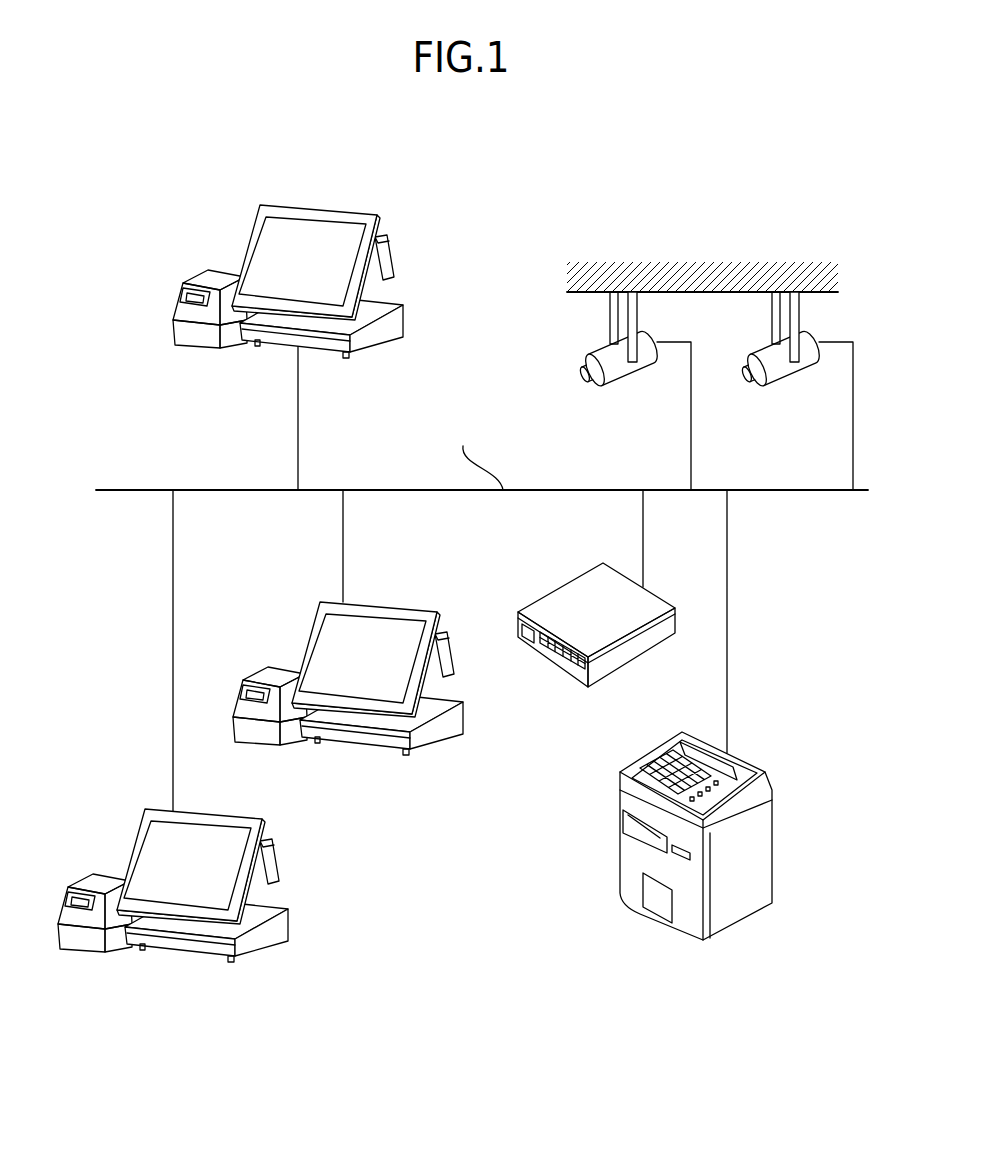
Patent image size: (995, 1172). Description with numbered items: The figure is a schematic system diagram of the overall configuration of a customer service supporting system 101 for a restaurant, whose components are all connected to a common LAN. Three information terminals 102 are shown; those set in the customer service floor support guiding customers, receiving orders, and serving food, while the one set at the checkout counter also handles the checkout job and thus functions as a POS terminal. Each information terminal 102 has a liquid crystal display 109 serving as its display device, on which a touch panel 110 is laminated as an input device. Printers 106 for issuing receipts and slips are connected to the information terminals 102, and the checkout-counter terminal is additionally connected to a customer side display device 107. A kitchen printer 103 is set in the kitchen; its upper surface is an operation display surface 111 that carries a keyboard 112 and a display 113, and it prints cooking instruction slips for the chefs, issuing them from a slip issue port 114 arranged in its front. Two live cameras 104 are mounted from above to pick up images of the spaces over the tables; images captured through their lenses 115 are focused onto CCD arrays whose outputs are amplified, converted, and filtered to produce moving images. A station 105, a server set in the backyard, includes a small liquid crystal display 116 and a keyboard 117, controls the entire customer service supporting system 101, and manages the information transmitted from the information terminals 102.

The customer service supporting system 101 is at (104, 225).
The information terminal 102 is at (264, 583).
The kitchen printer 103 is at (689, 855).
The live camera 104 is at (683, 359).
The station 105 is at (583, 638).
The printer 106 is at (200, 336).
The customer side display device 107 is at (392, 257).
The liquid crystal display 109 is at (278, 538).
The touch panel 110 is at (322, 228).
The operation display surface 111 is at (762, 772).
The keyboard 112 is at (660, 770).
The display 113 is at (738, 772).
The slip issue port 114 is at (650, 830).
The lens 115 is at (588, 368).
The small liquid crystal display 116 is at (527, 642).
The keyboard 117 is at (563, 670).